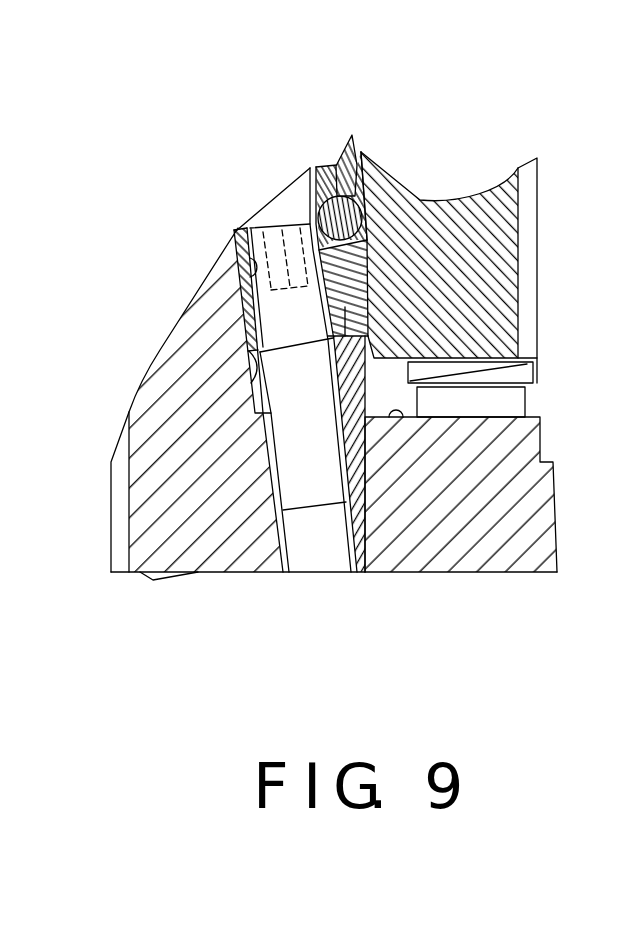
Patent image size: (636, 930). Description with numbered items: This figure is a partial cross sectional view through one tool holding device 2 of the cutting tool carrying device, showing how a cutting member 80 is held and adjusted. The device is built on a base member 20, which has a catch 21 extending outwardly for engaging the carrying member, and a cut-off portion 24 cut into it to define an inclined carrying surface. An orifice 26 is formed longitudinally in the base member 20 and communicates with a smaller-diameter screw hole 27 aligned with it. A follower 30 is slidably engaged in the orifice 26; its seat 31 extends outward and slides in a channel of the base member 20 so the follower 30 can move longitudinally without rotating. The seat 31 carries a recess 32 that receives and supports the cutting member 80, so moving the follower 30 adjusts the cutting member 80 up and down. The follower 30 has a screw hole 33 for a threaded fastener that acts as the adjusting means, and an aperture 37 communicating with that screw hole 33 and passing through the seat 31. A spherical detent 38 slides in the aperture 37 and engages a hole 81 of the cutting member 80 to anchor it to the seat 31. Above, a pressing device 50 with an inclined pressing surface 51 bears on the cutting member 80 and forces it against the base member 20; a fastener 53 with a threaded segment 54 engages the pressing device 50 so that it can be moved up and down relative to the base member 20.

The tool holding device 2 is at (211, 122).
The base member 20 is at (148, 492).
The catch 21 is at (535, 505).
The cut-off portion 24 is at (396, 417).
The orifice 26 is at (245, 347).
The screw hole 27 is at (286, 533).
The follower 30 is at (239, 227).
The seat 31 is at (373, 562).
The recess 32 is at (384, 236).
The screw hole 33 is at (233, 237).
The aperture 37 is at (313, 167).
The detent 38 is at (359, 192).
The pressing device 50 is at (507, 170).
The pressing surface 51 is at (380, 294).
The fastener 53 is at (510, 403).
The threaded segment 54 is at (527, 370).
The cutting member 80 is at (341, 166).
The hole 81 is at (361, 170).